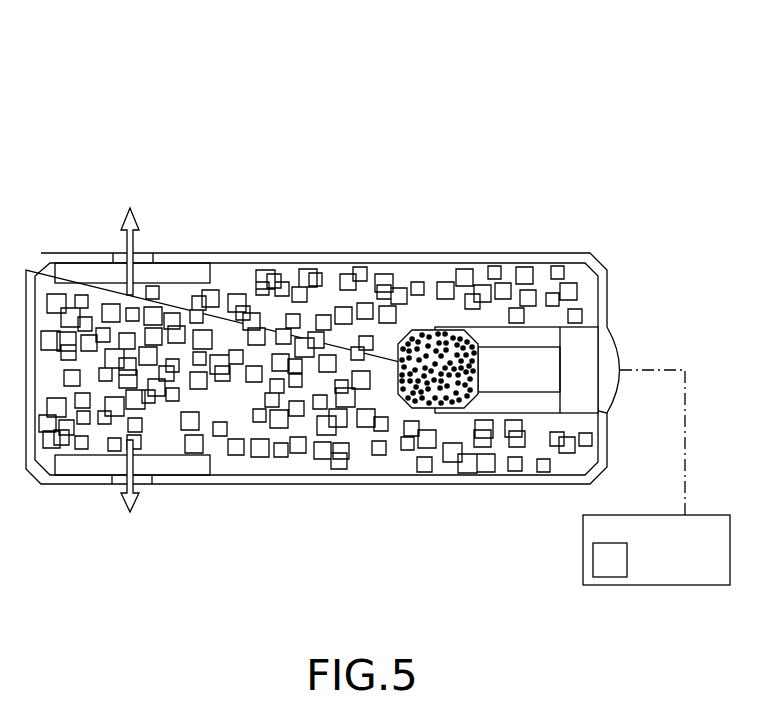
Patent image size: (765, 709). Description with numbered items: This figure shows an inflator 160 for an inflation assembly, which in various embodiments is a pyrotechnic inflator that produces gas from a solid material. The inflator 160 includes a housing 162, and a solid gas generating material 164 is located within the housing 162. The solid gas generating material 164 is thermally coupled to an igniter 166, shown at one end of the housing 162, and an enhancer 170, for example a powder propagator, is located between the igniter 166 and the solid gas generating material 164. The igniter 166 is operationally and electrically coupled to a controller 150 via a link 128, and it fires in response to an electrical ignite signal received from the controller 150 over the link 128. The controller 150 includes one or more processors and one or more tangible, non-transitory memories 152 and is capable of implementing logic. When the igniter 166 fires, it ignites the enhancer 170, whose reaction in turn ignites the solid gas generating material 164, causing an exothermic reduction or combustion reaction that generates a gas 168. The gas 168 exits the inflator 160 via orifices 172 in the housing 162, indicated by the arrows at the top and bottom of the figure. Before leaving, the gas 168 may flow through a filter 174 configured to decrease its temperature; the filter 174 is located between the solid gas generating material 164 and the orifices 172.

The inflator 160 is at (645, 108).
The housing 162 is at (273, 259).
The solid gas generating material 164 is at (292, 437).
The igniter 166 is at (587, 356).
The gas 168 is at (130, 366).
The enhancer 170 is at (440, 362).
The orifices 172 is at (155, 250).
The filter 174 is at (86, 278).
The link 128 is at (661, 442).
The controller 150 is at (670, 562).
The memory 152 is at (623, 571).